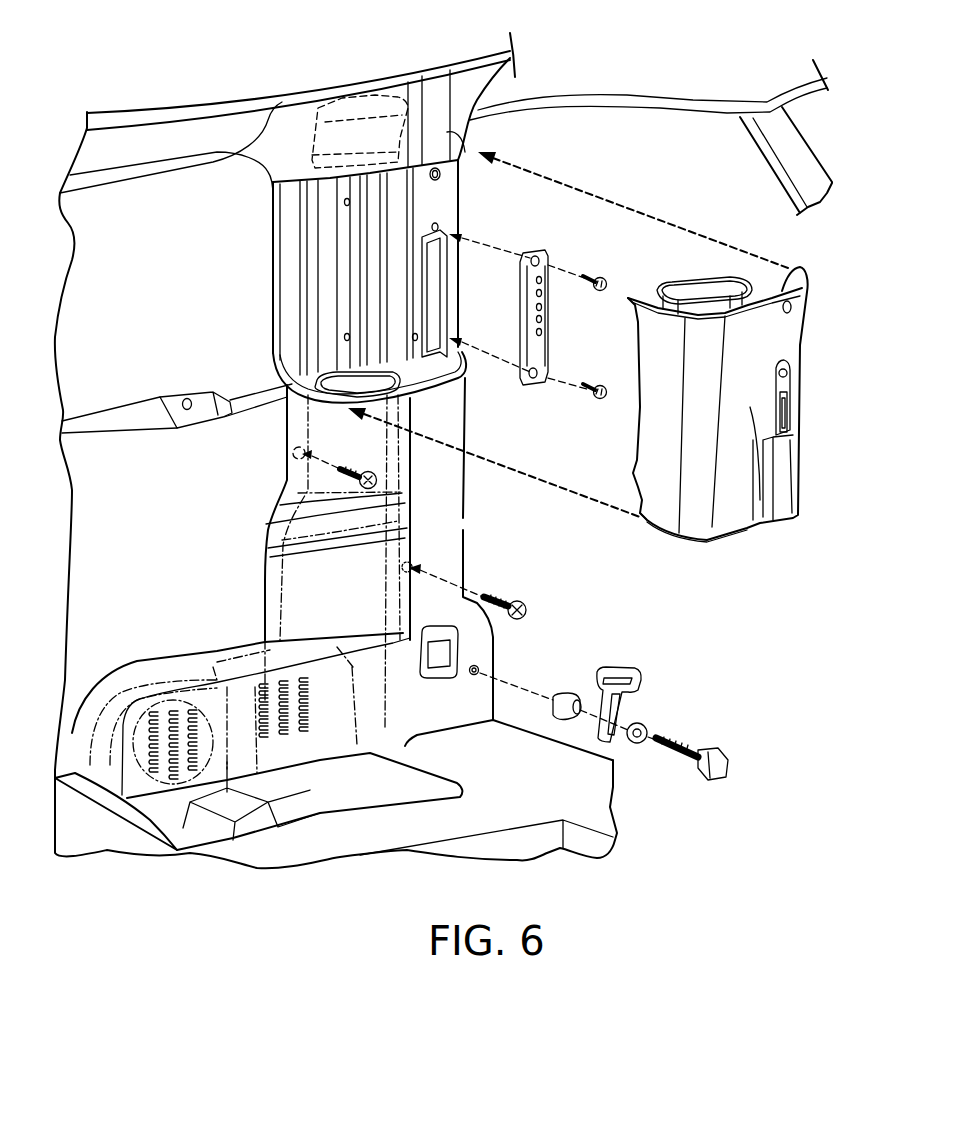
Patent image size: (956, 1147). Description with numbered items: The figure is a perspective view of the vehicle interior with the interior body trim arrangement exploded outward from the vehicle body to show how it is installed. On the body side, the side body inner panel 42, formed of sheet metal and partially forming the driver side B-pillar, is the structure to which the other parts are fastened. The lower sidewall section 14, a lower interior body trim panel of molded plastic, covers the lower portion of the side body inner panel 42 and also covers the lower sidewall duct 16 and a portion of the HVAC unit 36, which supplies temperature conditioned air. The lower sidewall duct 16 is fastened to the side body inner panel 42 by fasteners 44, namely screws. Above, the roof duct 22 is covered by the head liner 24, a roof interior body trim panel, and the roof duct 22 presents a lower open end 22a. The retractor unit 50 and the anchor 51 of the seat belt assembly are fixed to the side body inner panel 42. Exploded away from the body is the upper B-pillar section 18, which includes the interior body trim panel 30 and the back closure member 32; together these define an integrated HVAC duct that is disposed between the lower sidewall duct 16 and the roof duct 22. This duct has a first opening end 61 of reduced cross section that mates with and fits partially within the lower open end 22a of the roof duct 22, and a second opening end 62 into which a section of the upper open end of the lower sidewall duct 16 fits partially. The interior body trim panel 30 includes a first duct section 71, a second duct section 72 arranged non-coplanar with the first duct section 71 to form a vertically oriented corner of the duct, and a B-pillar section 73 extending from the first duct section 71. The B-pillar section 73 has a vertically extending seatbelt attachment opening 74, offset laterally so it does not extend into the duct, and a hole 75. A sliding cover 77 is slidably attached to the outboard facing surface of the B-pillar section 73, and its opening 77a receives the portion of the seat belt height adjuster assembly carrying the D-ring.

The lower sidewall section 14 is at (163, 525).
The lower sidewall duct 16 is at (407, 512).
The upper B-pillar section 18 is at (661, 557).
The roof duct 22 is at (315, 147).
The lower open end of the roof duct 22a is at (367, 160).
The head liner 24 is at (212, 144).
The interior body trim panel 30 is at (745, 548).
The back closure member 32 is at (745, 268).
The HVAC unit 36 is at (167, 816).
The side body inner panel 42 is at (292, 283).
The fasteners 44 is at (340, 472).
The retractor unit 50 is at (457, 650).
The anchor 51 is at (643, 682).
The first opening end 61 is at (697, 276).
The second opening end 62 is at (718, 540).
The first duct section 71 is at (755, 523).
The second duct section 72 is at (656, 425).
The B-pillar section 73 is at (767, 330).
The seatbelt attachment opening 74 is at (787, 373).
The hole 75 is at (805, 302).
The sliding cover 77 is at (787, 387).
The opening of the sliding cover 77a is at (787, 420).